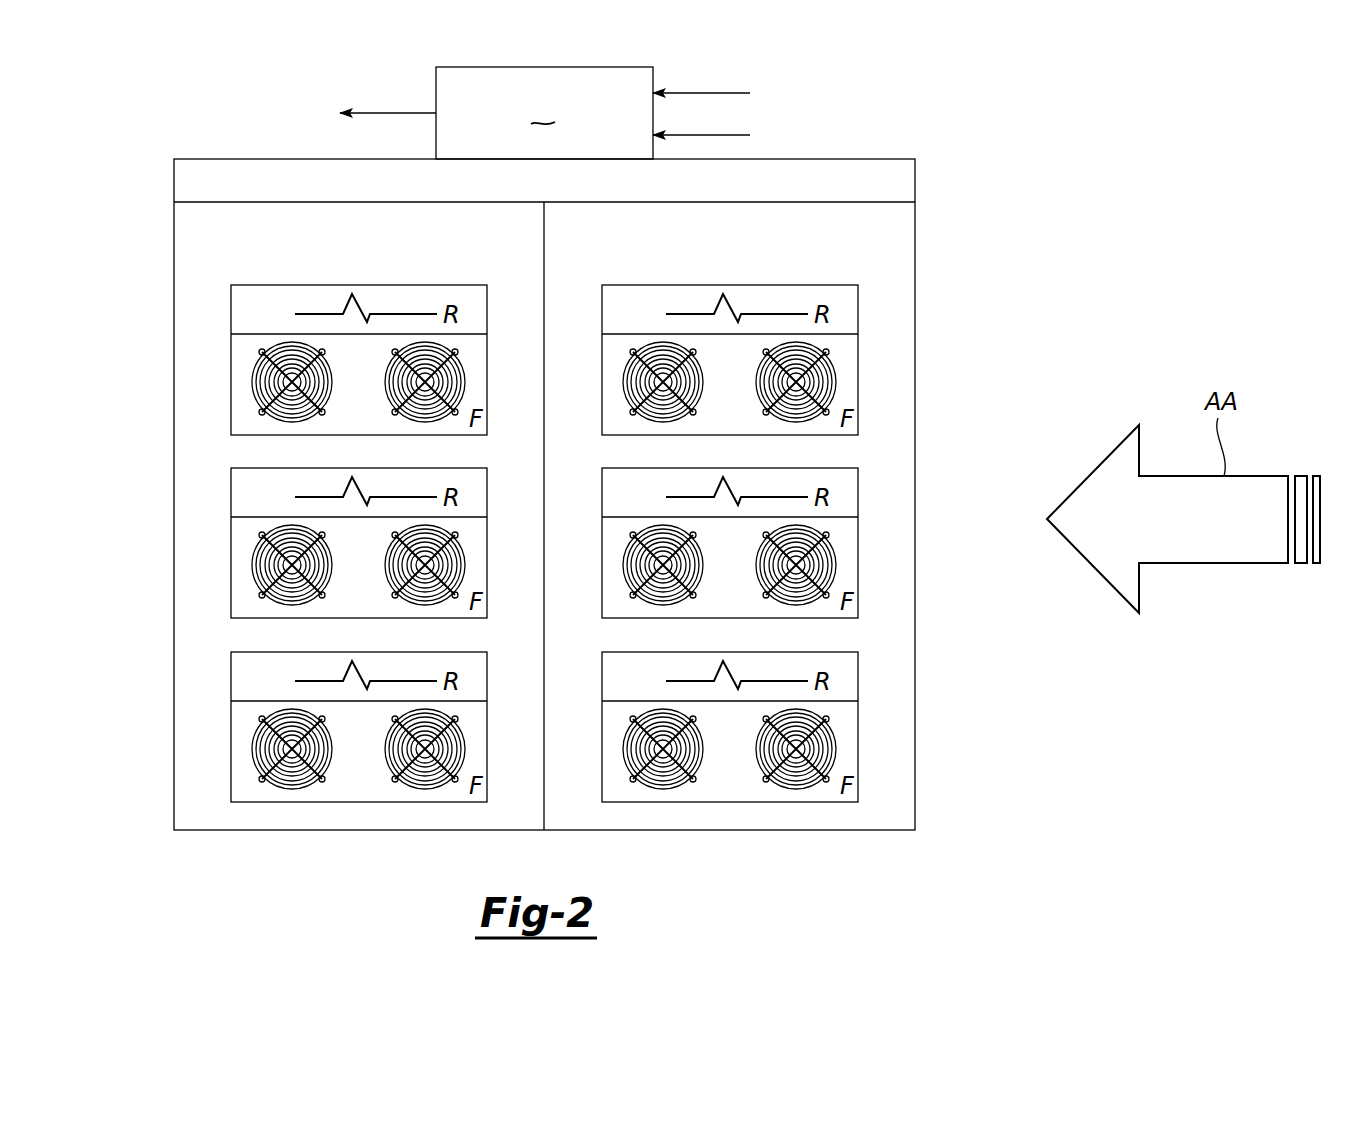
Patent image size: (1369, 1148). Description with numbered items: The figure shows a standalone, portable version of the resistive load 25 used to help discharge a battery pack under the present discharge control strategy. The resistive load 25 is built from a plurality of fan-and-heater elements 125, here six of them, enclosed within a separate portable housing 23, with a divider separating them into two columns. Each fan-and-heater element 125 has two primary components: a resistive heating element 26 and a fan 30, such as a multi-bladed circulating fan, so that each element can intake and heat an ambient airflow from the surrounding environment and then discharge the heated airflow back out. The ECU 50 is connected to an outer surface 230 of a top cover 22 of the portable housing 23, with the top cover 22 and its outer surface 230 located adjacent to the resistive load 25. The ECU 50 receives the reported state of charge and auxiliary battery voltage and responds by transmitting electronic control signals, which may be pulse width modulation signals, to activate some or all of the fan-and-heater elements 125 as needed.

The outer surface 230 is at (238, 158).
The top cover 22 is at (193, 184).
The portable housing 23 is at (915, 246).
The ECU 50 is at (668, 113).
The resistive load 25 is at (1080, 95).
The resistive heating element 26 is at (231, 312).
The fan-and-heater elements 125 is at (222, 357).
The fan 30 is at (255, 408).